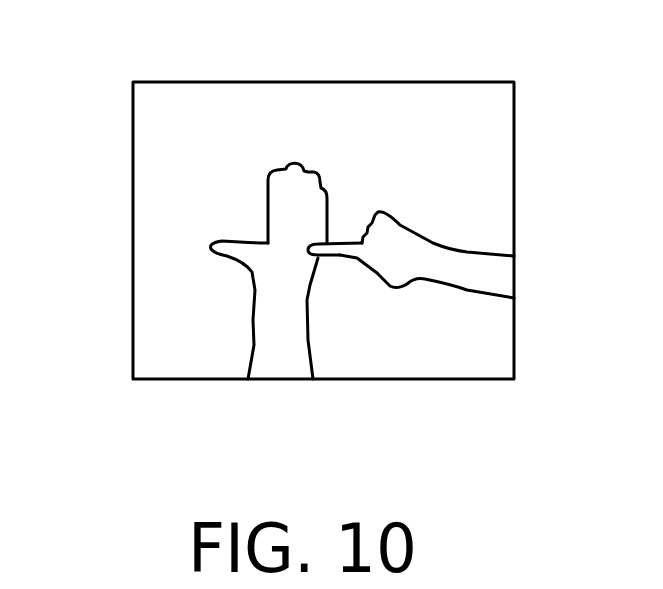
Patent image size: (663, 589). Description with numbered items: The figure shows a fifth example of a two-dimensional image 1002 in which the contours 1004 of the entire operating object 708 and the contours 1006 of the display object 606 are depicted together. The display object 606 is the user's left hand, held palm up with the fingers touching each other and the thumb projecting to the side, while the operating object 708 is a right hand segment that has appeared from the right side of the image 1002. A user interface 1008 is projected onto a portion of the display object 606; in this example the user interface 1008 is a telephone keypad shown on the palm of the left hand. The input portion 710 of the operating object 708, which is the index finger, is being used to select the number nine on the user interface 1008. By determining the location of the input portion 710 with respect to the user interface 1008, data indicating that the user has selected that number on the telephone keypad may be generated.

The 2D image 1002 is at (323, 82).
The contours of the operating object 1004 is at (473, 302).
The contours of the display object 1006 is at (179, 211).
The user interface 1008 is at (251, 262).
The display object 606 is at (290, 180).
The operating object 708 is at (410, 256).
The input portion 710 is at (352, 262).